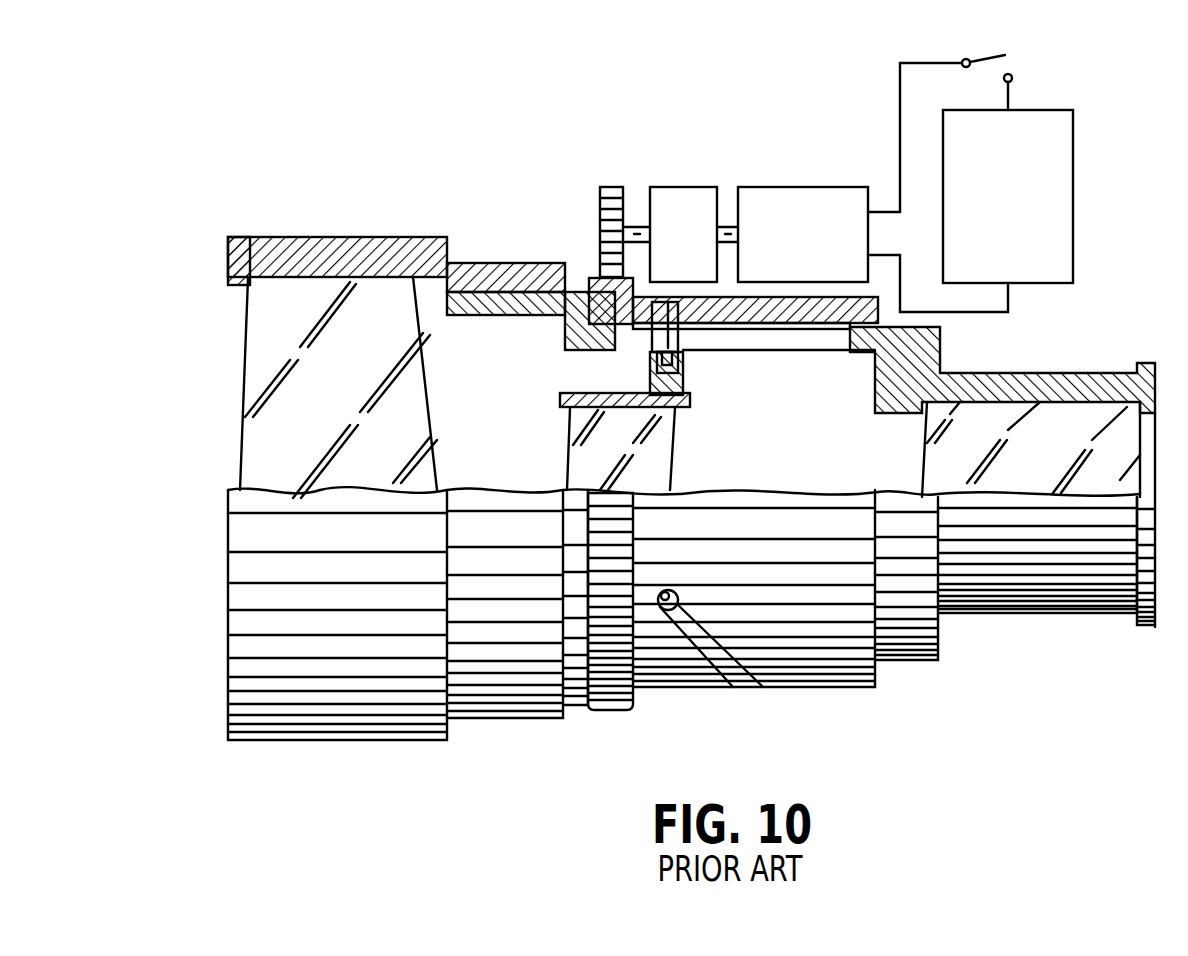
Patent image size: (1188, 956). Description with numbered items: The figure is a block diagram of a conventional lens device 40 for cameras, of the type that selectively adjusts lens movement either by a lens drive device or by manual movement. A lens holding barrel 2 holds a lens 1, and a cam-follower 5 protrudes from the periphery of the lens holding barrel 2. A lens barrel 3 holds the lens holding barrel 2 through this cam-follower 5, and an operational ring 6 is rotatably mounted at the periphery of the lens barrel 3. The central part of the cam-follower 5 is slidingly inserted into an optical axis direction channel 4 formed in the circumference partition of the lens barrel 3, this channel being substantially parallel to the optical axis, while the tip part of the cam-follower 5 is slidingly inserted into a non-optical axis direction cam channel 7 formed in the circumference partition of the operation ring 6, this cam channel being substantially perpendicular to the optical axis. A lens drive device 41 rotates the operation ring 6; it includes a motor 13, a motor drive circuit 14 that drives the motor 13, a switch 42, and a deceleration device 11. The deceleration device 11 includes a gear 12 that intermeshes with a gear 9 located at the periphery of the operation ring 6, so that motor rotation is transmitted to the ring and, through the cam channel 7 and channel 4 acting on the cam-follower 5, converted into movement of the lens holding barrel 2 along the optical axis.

The lens 1 is at (670, 440).
The lens holding barrel 2 is at (557, 400).
The lens barrel 3 is at (487, 265).
The optical axis direction channel 4 is at (815, 340).
The cam-follower 5 is at (657, 333).
The operational ring 6 is at (724, 305).
The non-optical axis direction cam channel 7 is at (690, 326).
The gear 9 is at (612, 712).
The deceleration device 11 is at (720, 170).
The gear 12 is at (600, 207).
The motor 13 is at (786, 232).
The motor drive circuit 14 is at (986, 205).
The lens device 40 is at (199, 219).
The lens drive device 41 is at (806, 163).
The switch 42 is at (993, 57).